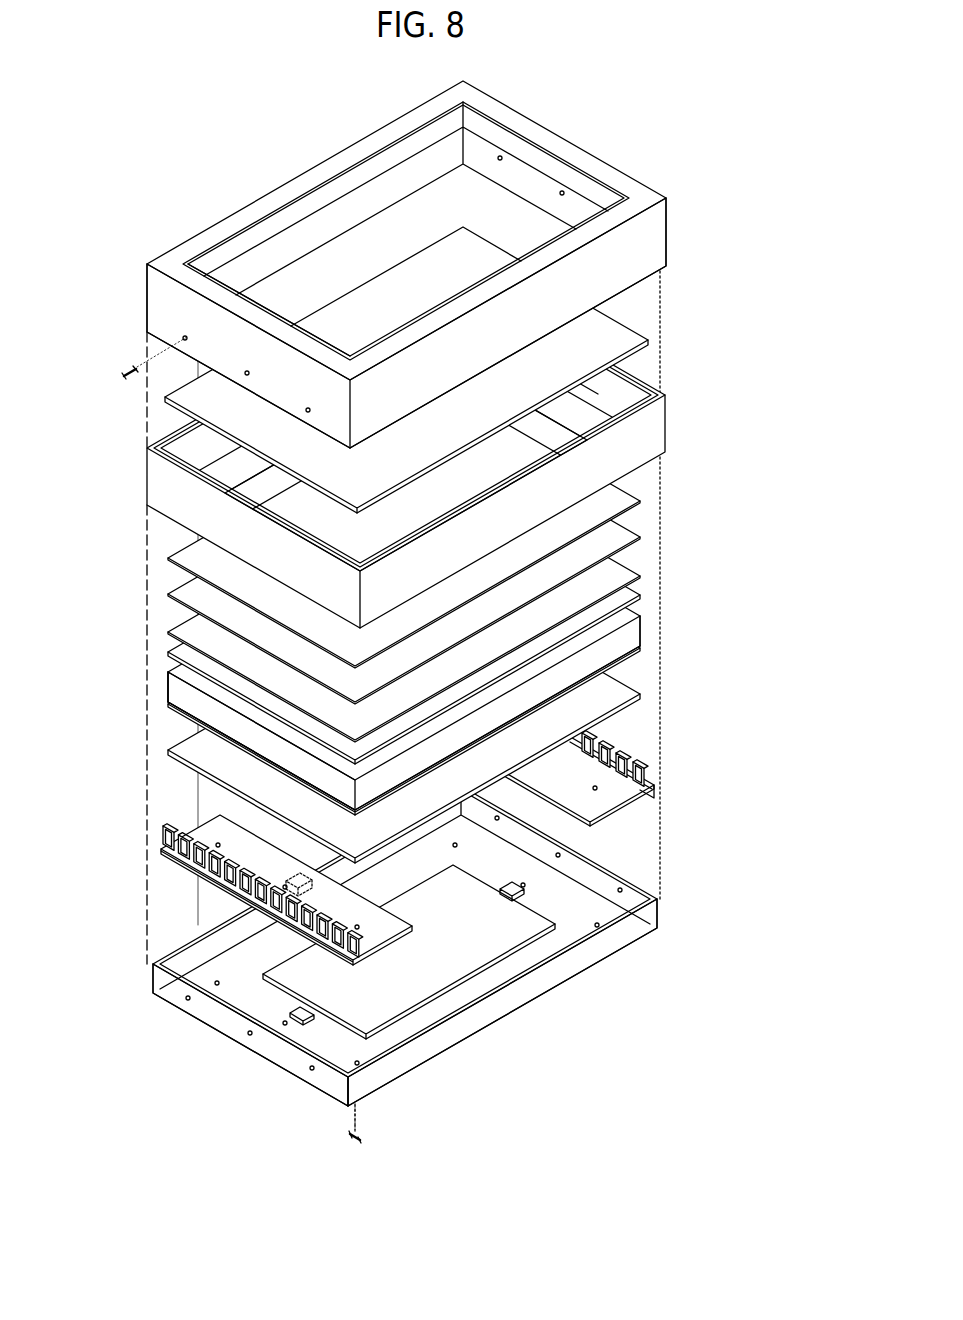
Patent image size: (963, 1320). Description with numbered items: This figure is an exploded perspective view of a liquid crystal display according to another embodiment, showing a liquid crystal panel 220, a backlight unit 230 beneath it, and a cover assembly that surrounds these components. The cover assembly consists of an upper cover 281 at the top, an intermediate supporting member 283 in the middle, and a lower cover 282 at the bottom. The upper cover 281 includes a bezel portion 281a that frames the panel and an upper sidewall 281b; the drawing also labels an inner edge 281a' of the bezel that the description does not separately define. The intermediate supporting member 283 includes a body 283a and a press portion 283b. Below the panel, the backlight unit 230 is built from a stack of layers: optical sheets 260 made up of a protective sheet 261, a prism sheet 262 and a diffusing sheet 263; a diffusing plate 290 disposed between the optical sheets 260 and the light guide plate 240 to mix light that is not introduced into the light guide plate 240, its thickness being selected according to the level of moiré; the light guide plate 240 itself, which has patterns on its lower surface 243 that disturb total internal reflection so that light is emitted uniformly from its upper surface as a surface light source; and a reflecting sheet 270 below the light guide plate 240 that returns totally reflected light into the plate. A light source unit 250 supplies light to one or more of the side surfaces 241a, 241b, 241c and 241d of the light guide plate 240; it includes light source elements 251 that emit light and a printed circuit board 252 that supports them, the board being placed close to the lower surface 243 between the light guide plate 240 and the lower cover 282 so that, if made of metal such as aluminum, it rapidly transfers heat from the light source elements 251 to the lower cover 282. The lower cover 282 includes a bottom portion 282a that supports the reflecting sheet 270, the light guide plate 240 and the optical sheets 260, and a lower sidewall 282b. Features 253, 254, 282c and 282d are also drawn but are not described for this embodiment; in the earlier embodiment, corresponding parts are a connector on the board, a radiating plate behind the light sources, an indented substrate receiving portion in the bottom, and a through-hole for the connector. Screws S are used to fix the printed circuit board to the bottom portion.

The upper cover 281 is at (353, 264).
The bezel portion 281a is at (353, 231).
The inner rim of top chassis 281a' is at (264, 274).
The upper sidewall 281b is at (153, 301).
The liquid crystal panel 220 is at (634, 334).
The intermediate supporting member 283 is at (352, 450).
The body 283a is at (163, 487).
The press portion 283b is at (160, 462).
The optical sheets 260 is at (467, 567).
The protective sheet 261 is at (632, 503).
The prism sheet 262 is at (632, 540).
The diffusing sheet 263 is at (632, 577).
The diffusing plate 290 is at (634, 598).
The light guide plate 240 is at (427, 659).
The side surface 241a is at (212, 708).
The side surface 241b is at (639, 634).
The side surface 241c is at (170, 682).
The side surface 241d is at (452, 748).
The lower surface 243 is at (302, 779).
The reflecting sheet 270 is at (634, 697).
The backlight unit 230 is at (457, 679).
The light source unit 250 is at (463, 848).
The light source elements 251 is at (646, 750).
The printed circuit board 252 is at (634, 797).
The printed circuit board 253 is at (298, 878).
The light source 254 is at (180, 830).
The lower cover 282 is at (405, 951).
The bottom portion 282a is at (283, 980).
The lower sidewall 282b is at (208, 1018).
The side wall of bottom chassis 282c is at (378, 1043).
The hole of bottom chassis 282d is at (301, 1025).
The screws S is at (128, 370).